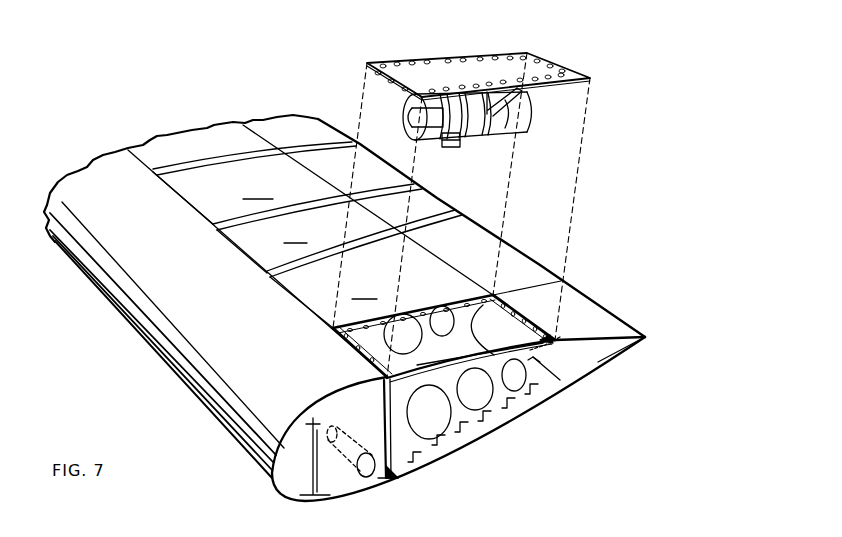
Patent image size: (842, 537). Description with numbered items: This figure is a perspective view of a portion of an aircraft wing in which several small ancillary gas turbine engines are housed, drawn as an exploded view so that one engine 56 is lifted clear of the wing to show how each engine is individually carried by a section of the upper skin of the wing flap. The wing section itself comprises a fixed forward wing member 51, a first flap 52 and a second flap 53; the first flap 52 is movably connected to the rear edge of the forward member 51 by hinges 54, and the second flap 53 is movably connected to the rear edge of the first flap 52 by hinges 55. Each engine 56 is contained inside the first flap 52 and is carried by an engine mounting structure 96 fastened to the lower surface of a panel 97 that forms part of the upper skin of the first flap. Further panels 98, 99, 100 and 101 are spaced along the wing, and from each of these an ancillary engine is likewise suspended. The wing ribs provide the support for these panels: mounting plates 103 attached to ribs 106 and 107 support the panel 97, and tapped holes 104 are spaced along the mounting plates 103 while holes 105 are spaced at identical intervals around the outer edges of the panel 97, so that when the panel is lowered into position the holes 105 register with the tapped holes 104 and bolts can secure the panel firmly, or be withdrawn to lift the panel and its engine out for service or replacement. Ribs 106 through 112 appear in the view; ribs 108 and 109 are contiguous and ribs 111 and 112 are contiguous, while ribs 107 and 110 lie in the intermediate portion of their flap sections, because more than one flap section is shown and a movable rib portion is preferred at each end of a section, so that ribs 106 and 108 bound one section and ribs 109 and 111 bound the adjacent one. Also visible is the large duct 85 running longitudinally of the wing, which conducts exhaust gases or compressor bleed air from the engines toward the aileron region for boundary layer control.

The fixed forward wing member 51 is at (82, 176).
The first flap 52 is at (522, 410).
The second flap 53 is at (613, 348).
The hinges 54 is at (404, 475).
The hinges 55 is at (534, 358).
The gas turbine engine 56 is at (505, 129).
The duct 85 is at (368, 472).
The engine mounting structure 96 is at (522, 92).
The panel 97 is at (427, 75).
The panel 98 is at (323, 302).
The panel 99 is at (262, 248).
The panel 100 is at (213, 198).
The panel 101 is at (197, 150).
The mounting plates 103 is at (440, 290).
The tapped holes 104 is at (518, 323).
The holes 105 is at (560, 67).
The rib 106 is at (545, 362).
The rib 107 is at (332, 330).
The rib 108 is at (291, 279).
The rib 109 is at (267, 273).
The rib 110 is at (228, 231).
The rib 111 is at (195, 175).
The rib 112 is at (263, 150).